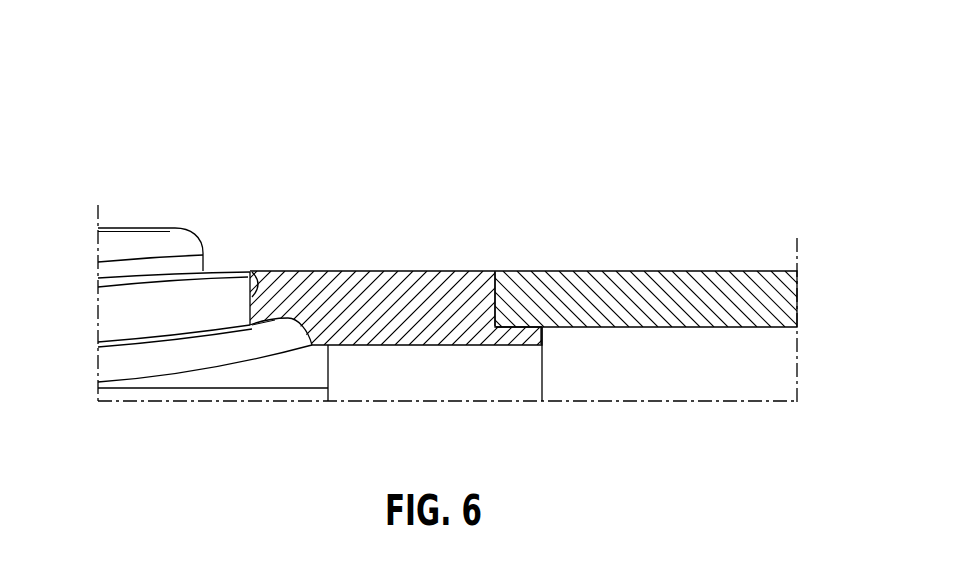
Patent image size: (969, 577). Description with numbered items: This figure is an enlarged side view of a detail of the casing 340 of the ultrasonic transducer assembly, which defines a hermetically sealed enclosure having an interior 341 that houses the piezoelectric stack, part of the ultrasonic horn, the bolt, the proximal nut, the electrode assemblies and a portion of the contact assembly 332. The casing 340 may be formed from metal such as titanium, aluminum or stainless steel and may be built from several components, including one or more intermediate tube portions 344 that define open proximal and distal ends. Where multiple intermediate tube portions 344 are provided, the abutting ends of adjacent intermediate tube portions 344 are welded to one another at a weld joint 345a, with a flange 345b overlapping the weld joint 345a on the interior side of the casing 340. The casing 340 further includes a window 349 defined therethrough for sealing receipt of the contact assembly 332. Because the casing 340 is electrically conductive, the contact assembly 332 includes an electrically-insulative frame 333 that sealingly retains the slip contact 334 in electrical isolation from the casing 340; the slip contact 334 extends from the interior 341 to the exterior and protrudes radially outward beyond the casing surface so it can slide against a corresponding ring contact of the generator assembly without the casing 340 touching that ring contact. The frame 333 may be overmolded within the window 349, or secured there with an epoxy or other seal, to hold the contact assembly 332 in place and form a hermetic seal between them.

The contact assembly 332 is at (194, 227).
The electrically-insulative frame 333 is at (123, 316).
The slip contact 334 is at (132, 242).
The casing 340 is at (680, 259).
The interior 341 is at (705, 372).
The intermediate tube portion 344 is at (390, 282).
The weld joint 345a is at (497, 296).
The flange 345b is at (523, 333).
The window 349 is at (263, 268).